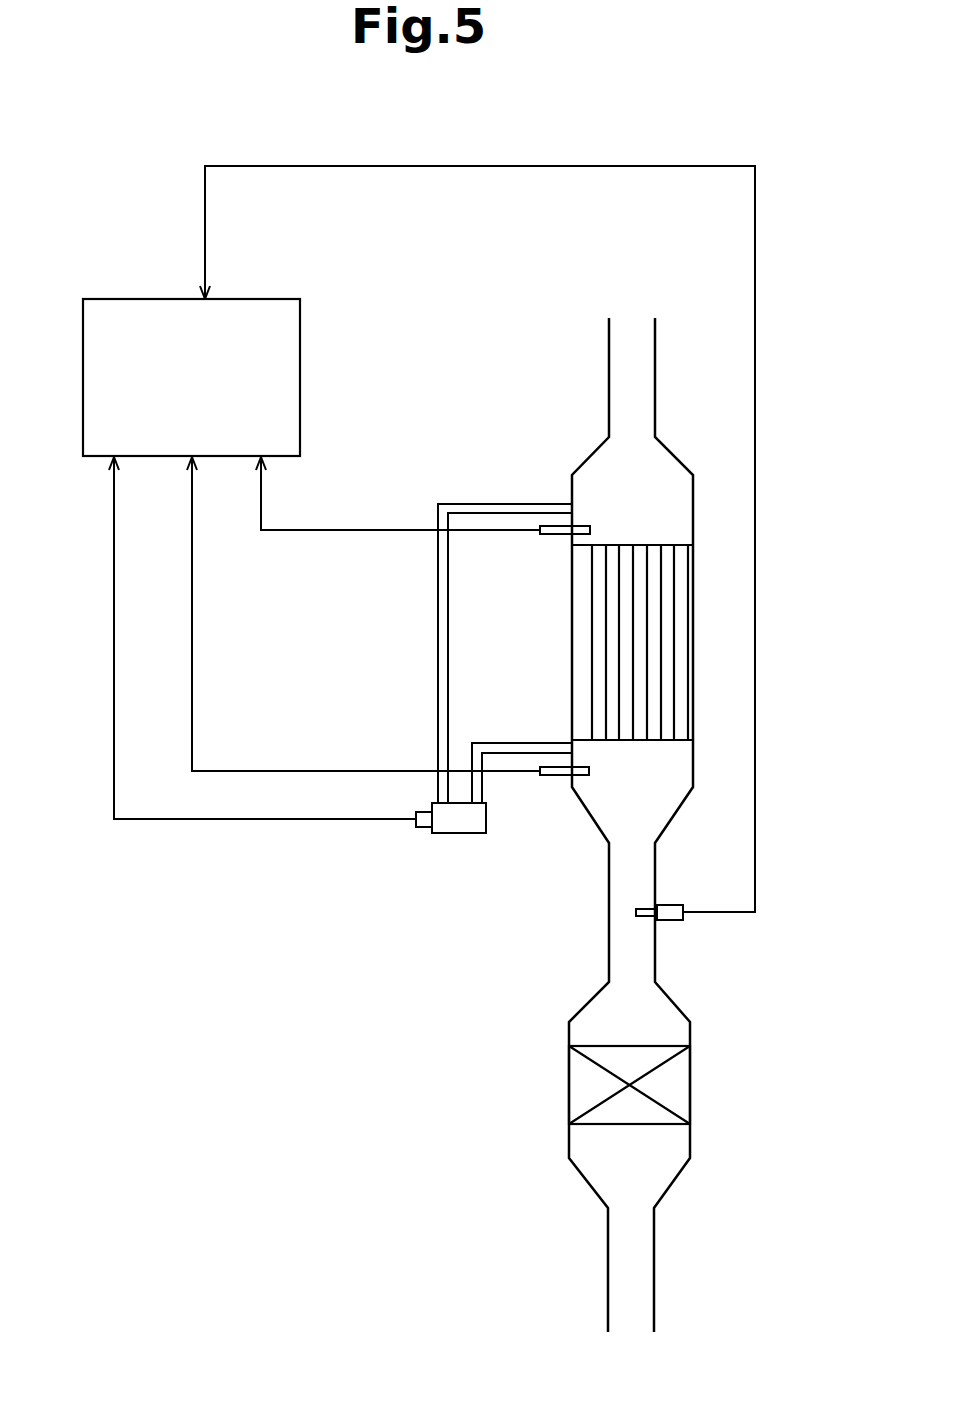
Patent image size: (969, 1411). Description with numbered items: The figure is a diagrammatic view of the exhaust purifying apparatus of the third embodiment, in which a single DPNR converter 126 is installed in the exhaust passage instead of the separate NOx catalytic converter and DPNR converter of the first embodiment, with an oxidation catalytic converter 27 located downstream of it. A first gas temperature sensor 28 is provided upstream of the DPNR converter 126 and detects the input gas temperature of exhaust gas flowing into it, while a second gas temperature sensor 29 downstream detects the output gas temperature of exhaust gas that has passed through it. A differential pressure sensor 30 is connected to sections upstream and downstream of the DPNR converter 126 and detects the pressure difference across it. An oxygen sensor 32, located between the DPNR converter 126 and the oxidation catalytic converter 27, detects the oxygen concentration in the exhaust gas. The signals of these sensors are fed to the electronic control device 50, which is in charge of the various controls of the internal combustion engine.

The electronic control device 50 is at (122, 298).
The first gas temperature sensor 28 is at (544, 535).
The DPNR converter 126 is at (586, 633).
The second gas temperature sensor 29 is at (555, 777).
The differential pressure sensor 30 is at (445, 836).
The oxygen sensor 32 is at (678, 922).
The oxidation catalytic converter 27 is at (588, 1088).